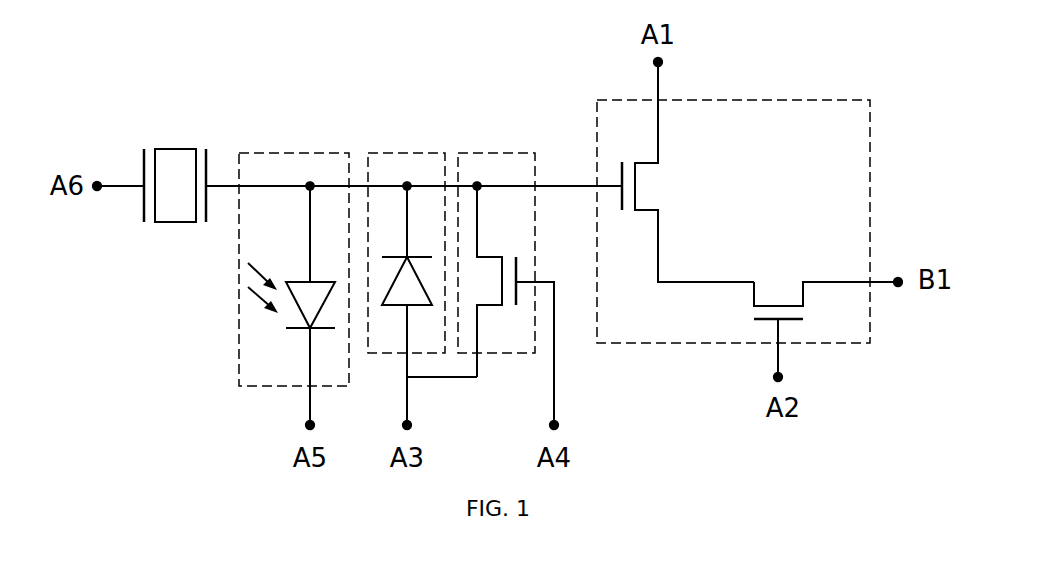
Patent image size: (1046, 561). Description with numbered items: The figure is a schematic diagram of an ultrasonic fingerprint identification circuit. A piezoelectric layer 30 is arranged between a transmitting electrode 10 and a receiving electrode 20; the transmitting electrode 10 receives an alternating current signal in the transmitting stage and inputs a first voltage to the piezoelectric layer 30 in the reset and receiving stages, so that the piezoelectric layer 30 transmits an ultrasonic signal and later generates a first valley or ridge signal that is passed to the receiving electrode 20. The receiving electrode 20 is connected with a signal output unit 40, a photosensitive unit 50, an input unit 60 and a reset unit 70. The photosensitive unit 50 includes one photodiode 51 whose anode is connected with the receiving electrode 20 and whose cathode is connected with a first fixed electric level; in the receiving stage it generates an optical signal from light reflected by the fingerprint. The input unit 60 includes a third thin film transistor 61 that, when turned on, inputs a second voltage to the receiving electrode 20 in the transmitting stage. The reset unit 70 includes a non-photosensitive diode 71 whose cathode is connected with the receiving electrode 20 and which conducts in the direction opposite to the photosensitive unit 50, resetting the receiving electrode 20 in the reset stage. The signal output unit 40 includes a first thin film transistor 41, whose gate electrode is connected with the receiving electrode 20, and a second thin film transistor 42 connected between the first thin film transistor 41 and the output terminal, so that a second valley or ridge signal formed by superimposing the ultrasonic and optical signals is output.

The transmitting electrode 10 is at (142, 160).
The receiving electrode 20 is at (207, 158).
The piezoelectric layer 30 is at (177, 148).
The signal output unit 40 is at (748, 100).
The first thin film transistor 41 is at (668, 186).
The second thin film transistor 42 is at (778, 282).
The photosensitive unit 50 is at (301, 152).
The photodiode 51 is at (263, 330).
The input unit 60 is at (495, 152).
The third thin film transistor 61 is at (492, 322).
The reset unit 70 is at (405, 152).
The non-photosensitive diode 71 is at (415, 322).